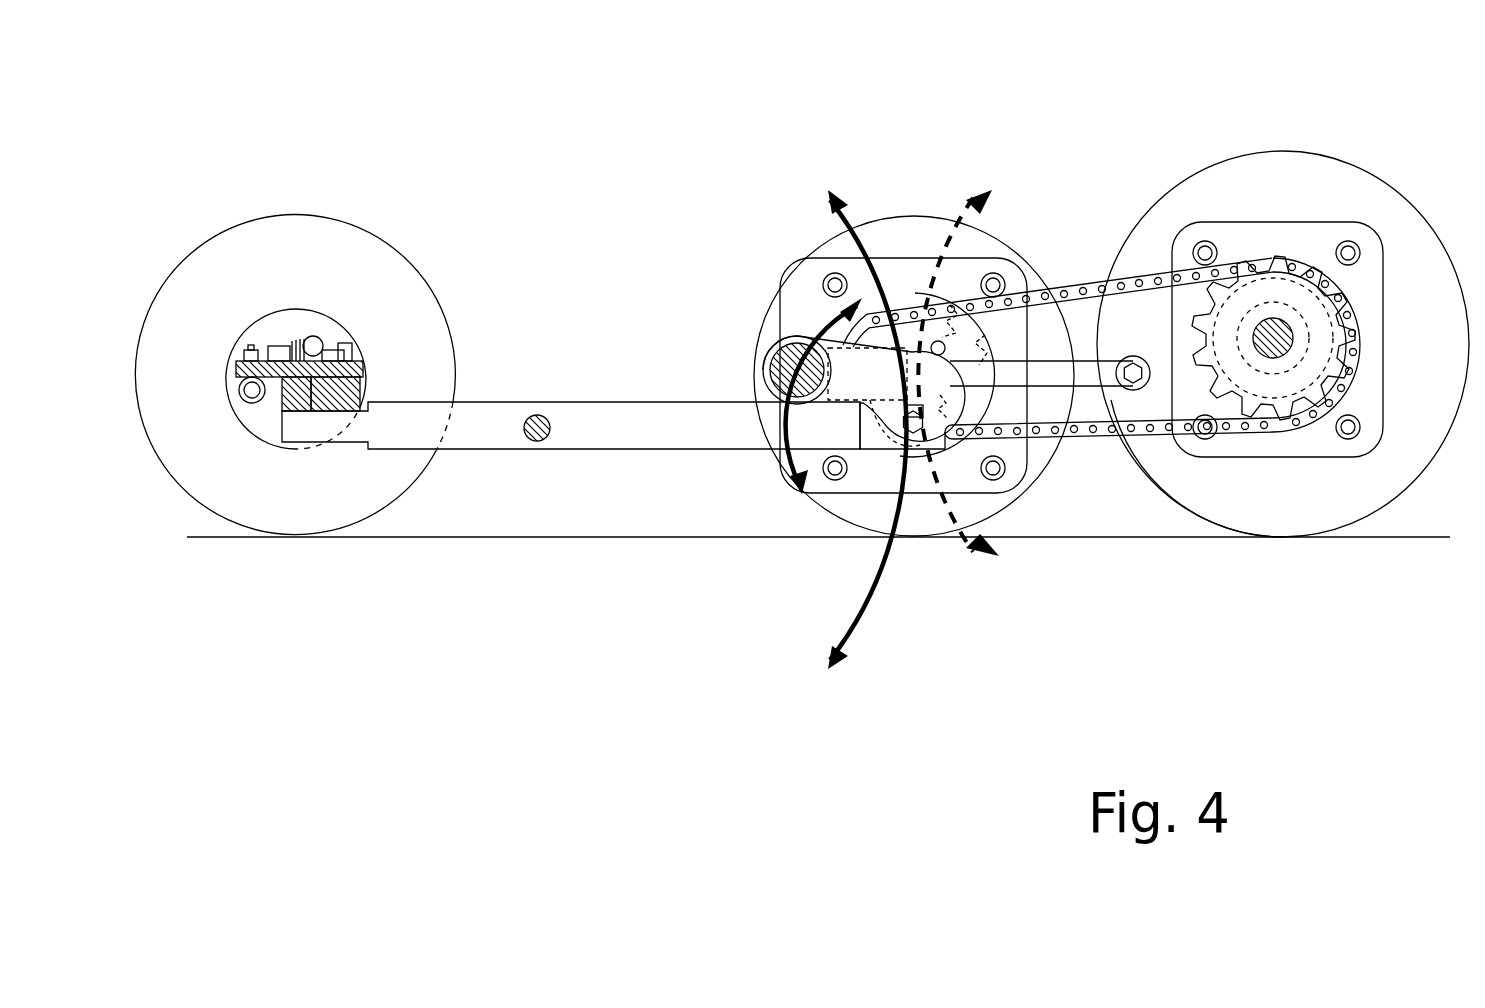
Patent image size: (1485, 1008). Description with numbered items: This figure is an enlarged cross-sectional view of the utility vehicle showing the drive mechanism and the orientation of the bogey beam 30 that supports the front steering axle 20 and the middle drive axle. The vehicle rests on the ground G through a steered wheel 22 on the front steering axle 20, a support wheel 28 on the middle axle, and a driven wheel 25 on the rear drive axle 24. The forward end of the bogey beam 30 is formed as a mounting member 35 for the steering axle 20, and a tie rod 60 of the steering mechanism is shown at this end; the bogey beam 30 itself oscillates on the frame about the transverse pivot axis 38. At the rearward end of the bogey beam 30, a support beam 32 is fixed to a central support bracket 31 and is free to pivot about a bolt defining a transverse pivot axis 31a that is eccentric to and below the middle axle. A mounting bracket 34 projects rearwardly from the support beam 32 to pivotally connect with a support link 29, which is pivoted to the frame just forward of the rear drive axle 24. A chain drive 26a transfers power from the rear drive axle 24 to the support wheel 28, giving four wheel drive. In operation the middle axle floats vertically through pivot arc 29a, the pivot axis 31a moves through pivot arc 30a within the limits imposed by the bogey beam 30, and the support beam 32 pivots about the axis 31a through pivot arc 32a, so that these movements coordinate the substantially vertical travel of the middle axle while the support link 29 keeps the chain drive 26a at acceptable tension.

The front steering axle 20 is at (281, 410).
The steered wheel 22 is at (397, 245).
The rear drive axle 24 is at (1300, 333).
The driven wheel 25 is at (1338, 160).
The chain drive 26a is at (1268, 252).
The support wheel 28 is at (1007, 245).
The support link 29 is at (1090, 388).
The pivot arc 29a is at (950, 500).
The bogey beam 30 is at (485, 449).
The pivot arc 30a is at (870, 607).
The central support bracket 31 is at (872, 435).
The transverse pivot axis 31a is at (882, 432).
The support beam 32 is at (775, 348).
The pivot arc 32a is at (755, 435).
The mounting bracket 34 is at (868, 284).
The mounting member 35 is at (362, 392).
The transverse pivot axis 38 is at (532, 414).
The tie rod 60 is at (242, 387).
The ground G is at (1415, 537).